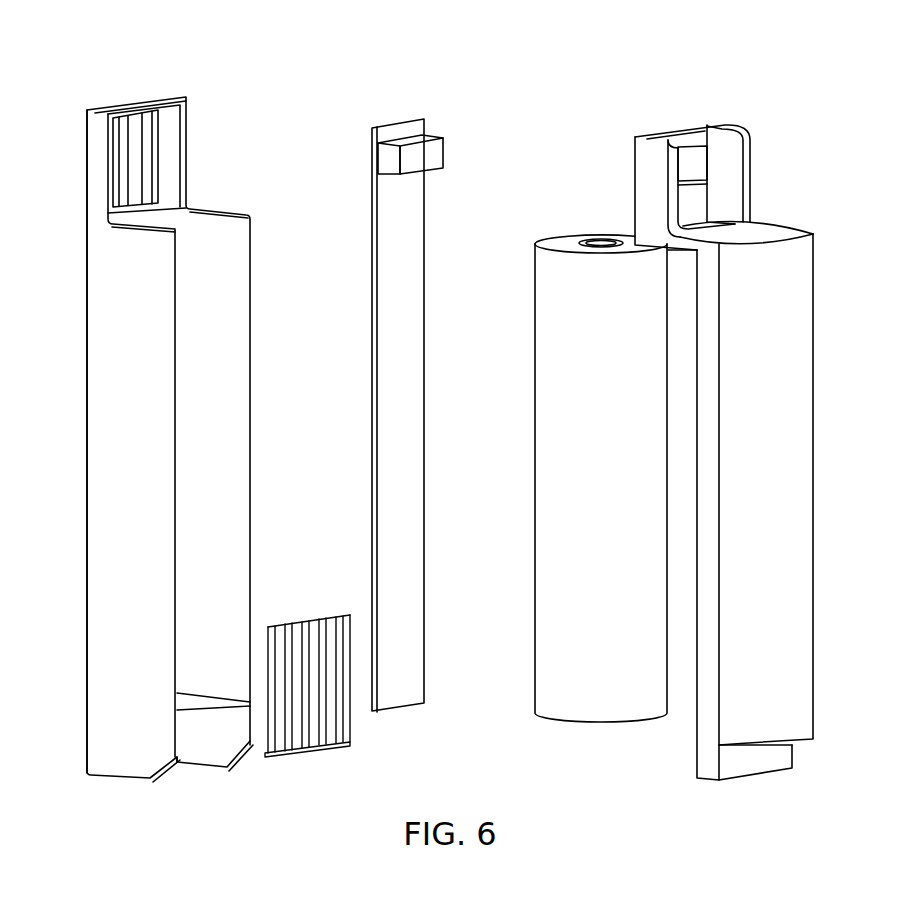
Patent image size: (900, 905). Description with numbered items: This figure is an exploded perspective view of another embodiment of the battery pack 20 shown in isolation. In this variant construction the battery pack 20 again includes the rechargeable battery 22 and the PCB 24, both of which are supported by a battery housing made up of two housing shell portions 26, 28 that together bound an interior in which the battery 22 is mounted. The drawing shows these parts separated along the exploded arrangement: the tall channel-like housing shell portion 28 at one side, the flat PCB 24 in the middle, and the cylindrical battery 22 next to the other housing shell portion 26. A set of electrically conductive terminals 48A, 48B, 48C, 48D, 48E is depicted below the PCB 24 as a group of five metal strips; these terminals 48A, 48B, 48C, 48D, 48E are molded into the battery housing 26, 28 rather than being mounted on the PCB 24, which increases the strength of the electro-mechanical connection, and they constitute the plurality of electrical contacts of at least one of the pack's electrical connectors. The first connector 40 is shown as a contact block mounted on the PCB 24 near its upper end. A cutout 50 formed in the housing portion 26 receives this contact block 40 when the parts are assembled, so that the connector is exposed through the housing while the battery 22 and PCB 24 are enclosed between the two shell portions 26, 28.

The battery pack 20 is at (85, 90).
The rechargeable battery 22 is at (548, 482).
The PCB 24 is at (413, 392).
The housing shell portion 26 is at (807, 483).
The housing shell portion 28 is at (100, 442).
The first connector 40 is at (438, 150).
The terminal 48A is at (275, 757).
The terminal 48B is at (293, 750).
The terminal 48C is at (312, 730).
The terminal 48D is at (327, 712).
The terminal 48E is at (347, 737).
The cutout 50 is at (690, 160).